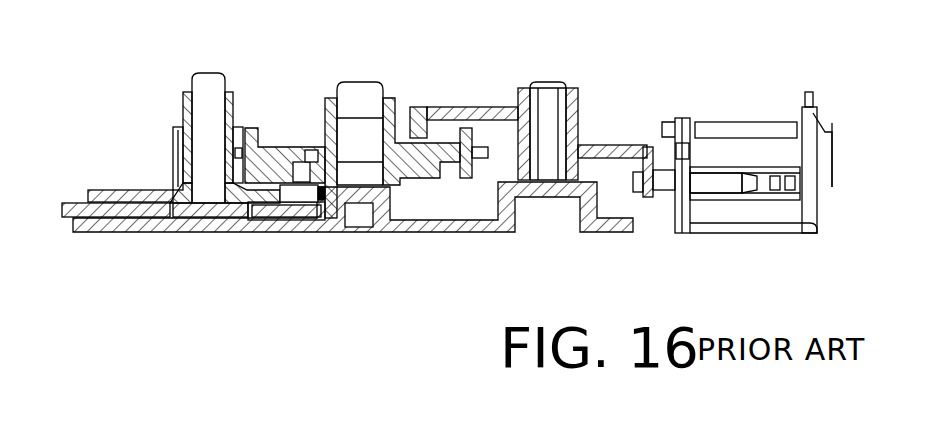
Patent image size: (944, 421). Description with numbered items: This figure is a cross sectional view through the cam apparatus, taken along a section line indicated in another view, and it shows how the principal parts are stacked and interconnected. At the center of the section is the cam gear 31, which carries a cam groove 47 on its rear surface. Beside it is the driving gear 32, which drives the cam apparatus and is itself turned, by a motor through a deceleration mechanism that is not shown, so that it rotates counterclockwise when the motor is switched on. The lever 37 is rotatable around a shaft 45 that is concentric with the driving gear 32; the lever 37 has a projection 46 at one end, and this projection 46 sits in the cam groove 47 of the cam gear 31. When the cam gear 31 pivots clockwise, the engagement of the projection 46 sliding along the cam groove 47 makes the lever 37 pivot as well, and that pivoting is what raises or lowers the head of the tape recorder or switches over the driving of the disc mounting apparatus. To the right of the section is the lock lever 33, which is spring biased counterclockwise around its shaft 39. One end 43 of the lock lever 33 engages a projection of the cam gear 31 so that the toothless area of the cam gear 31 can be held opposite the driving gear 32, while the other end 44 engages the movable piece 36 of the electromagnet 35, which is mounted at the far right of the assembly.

The cam gear 31 is at (326, 98).
The driving gear 32 is at (175, 150).
The lock lever 33 is at (478, 104).
The electromagnet 35 is at (757, 227).
The movable piece 36 is at (667, 197).
The lever 37 is at (295, 220).
The shaft 39 is at (551, 84).
The end of the lock lever 43 is at (424, 125).
The other end of the lock lever 44 is at (646, 147).
The shaft 45 is at (160, 223).
The projection 46 is at (300, 173).
The cam groove 47 is at (293, 150).